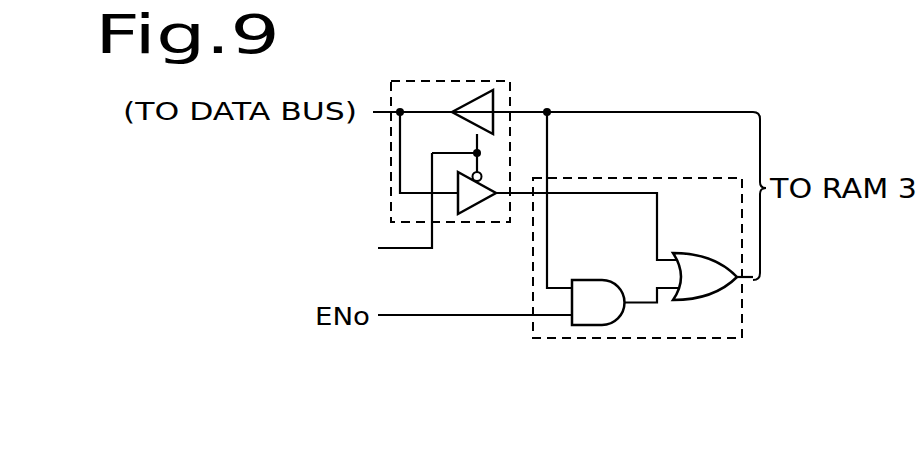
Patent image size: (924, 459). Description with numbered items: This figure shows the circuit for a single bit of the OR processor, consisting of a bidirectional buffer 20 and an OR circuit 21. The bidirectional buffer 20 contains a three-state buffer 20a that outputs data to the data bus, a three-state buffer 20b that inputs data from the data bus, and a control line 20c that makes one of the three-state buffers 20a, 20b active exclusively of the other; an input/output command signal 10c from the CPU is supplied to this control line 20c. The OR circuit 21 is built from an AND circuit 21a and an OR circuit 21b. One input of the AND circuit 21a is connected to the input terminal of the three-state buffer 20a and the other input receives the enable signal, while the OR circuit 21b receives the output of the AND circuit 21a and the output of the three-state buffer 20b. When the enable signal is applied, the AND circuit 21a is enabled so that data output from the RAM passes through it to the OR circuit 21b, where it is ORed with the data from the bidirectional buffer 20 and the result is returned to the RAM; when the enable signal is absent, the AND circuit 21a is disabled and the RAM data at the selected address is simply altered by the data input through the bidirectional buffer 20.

The bidirectional buffer 20 is at (415, 80).
The three-state buffer 20a is at (480, 96).
The three-state buffer 20b is at (480, 215).
The control line 20c is at (443, 153).
The input/output command signal 10c is at (374, 207).
The OR circuit 21 is at (742, 315).
The AND circuit 21a is at (598, 278).
The OR circuit 21b is at (702, 252).